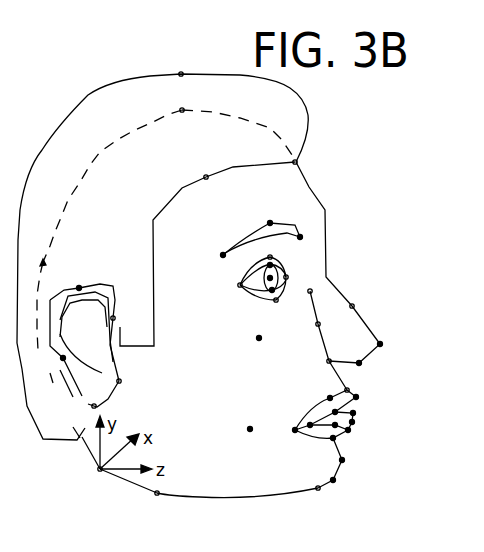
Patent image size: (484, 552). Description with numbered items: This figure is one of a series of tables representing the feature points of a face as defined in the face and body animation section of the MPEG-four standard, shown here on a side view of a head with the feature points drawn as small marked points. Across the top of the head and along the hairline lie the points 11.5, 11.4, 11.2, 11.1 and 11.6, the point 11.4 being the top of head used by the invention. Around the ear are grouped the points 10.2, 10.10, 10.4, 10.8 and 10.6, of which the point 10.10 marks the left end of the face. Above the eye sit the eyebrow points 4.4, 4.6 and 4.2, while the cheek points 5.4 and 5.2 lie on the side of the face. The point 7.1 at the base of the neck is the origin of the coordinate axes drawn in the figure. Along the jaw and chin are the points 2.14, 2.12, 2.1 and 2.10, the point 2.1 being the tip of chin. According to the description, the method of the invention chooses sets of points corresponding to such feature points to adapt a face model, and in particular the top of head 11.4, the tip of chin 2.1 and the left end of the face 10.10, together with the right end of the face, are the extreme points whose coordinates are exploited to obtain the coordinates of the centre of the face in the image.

The top of head feature point 11.5 is at (178, 63).
The top of head feature point 11.4 is at (180, 101).
The hairline side feature point 11.2 is at (197, 164).
The hairline front feature point 11.1 is at (317, 165).
The hairline temple feature point 11.6 is at (43, 253).
The top of ear feature point 10.2 is at (94, 277).
The left end of the face feature point 10.10 is at (136, 319).
The back of ear feature point 10.4 is at (44, 359).
The lower ear attachment feature point 10.8 is at (138, 383).
The earlobe feature point 10.6 is at (72, 407).
The eyebrow middle feature point 4.4 is at (256, 215).
The inner eyebrow feature point 4.6 is at (208, 252).
The outer eyebrow feature point 4.2 is at (304, 247).
The cheek feature point 5.4 is at (274, 339).
The lower cheek feature point 5.2 is at (239, 417).
The neck origin feature point (coordinate origin) 7.1 is at (83, 476).
The jaw feature point 2.14 is at (138, 503).
The chin side feature point 2.12 is at (306, 500).
The tip of chin feature point 2.1 is at (348, 490).
The chin under lip feature point 2.10 is at (360, 463).